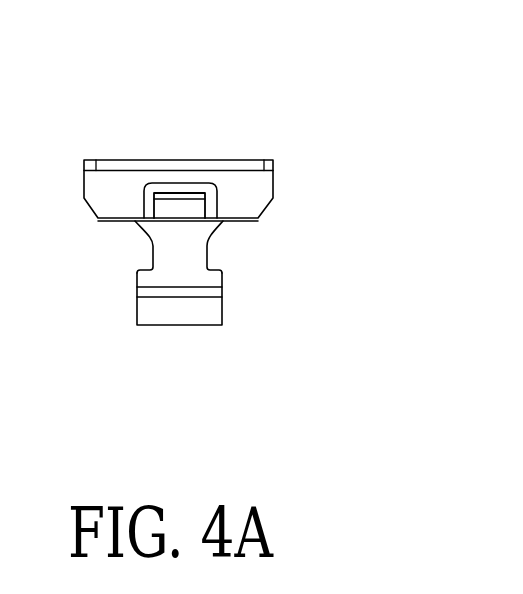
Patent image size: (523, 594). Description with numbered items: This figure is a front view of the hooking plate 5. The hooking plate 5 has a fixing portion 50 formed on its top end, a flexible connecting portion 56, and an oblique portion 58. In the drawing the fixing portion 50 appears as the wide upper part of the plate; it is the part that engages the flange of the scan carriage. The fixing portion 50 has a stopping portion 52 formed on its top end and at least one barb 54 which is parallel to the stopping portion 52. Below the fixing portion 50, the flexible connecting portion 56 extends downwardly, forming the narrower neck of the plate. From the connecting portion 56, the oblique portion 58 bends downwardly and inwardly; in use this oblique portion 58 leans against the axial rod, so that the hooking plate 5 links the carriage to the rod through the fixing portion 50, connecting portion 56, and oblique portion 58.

The hooking plate 5 is at (87, 115).
The fixing portion 50 is at (365, 137).
The stopping portion 52 is at (240, 161).
The barb 54 is at (188, 203).
The flexible connecting portion 56 is at (192, 254).
The oblique portion 58 is at (187, 307).